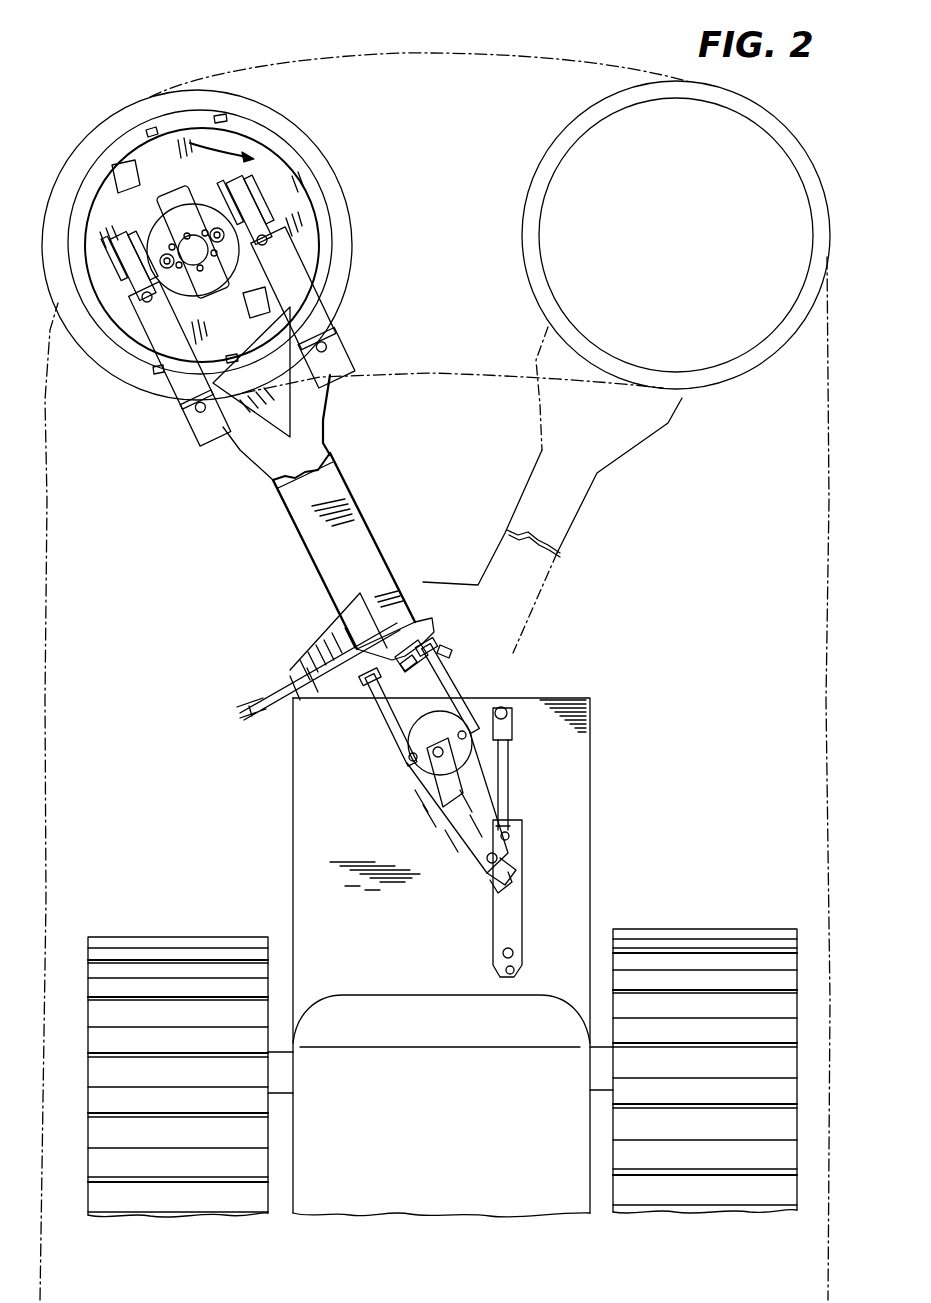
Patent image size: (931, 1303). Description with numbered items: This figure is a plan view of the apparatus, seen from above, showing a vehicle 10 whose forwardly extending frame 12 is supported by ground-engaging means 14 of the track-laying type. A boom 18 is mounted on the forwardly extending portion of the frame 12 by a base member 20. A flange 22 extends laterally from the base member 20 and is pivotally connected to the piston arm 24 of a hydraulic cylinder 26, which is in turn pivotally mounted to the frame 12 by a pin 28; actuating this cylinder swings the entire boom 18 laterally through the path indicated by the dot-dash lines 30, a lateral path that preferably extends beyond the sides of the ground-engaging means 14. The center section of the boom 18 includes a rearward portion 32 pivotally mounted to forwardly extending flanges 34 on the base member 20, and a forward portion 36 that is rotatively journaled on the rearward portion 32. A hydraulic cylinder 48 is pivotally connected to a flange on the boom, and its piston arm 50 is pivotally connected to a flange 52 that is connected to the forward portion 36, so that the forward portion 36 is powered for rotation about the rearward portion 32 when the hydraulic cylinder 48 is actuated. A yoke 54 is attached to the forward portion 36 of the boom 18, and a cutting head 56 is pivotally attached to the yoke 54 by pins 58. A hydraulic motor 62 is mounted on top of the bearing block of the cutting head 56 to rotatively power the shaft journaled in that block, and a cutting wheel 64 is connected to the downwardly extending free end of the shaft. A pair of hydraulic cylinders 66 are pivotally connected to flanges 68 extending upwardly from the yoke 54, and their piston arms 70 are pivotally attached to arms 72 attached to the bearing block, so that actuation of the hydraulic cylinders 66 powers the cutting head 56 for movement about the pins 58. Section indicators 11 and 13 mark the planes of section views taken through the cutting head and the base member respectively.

The vehicle 10 is at (212, 838).
The section line 11- 11 is at (212, 108).
The frame 12 is at (327, 768).
The section line 13- 13 is at (395, 672).
The ground-engaging means 14 is at (162, 952).
The boom 18 is at (228, 536).
The base member 20 is at (408, 747).
The flange 22 is at (487, 703).
The piston arm 24 is at (505, 780).
The hydraulic cylinder 26 is at (497, 923).
The pin 28 is at (500, 970).
The dot-dash lines 30 is at (399, 60).
The rearward portion 32 is at (422, 643).
The forwardly extending flanges 34 is at (457, 683).
The forward portion 36 is at (362, 533).
The hydraulic cylinder 48 is at (282, 616).
The piston arm 50 is at (277, 700).
The flange 52 is at (328, 637).
The yoke 54 is at (330, 413).
The cutting head 56 is at (760, 372).
The pins 58 is at (277, 207).
The hydraulic motor 62 is at (212, 200).
The cutting wheel 64 is at (290, 153).
The hydraulic cylinders 66 is at (323, 330).
The flanges 68 is at (330, 385).
The piston arms 70 is at (83, 233).
The arms 72 is at (136, 236).